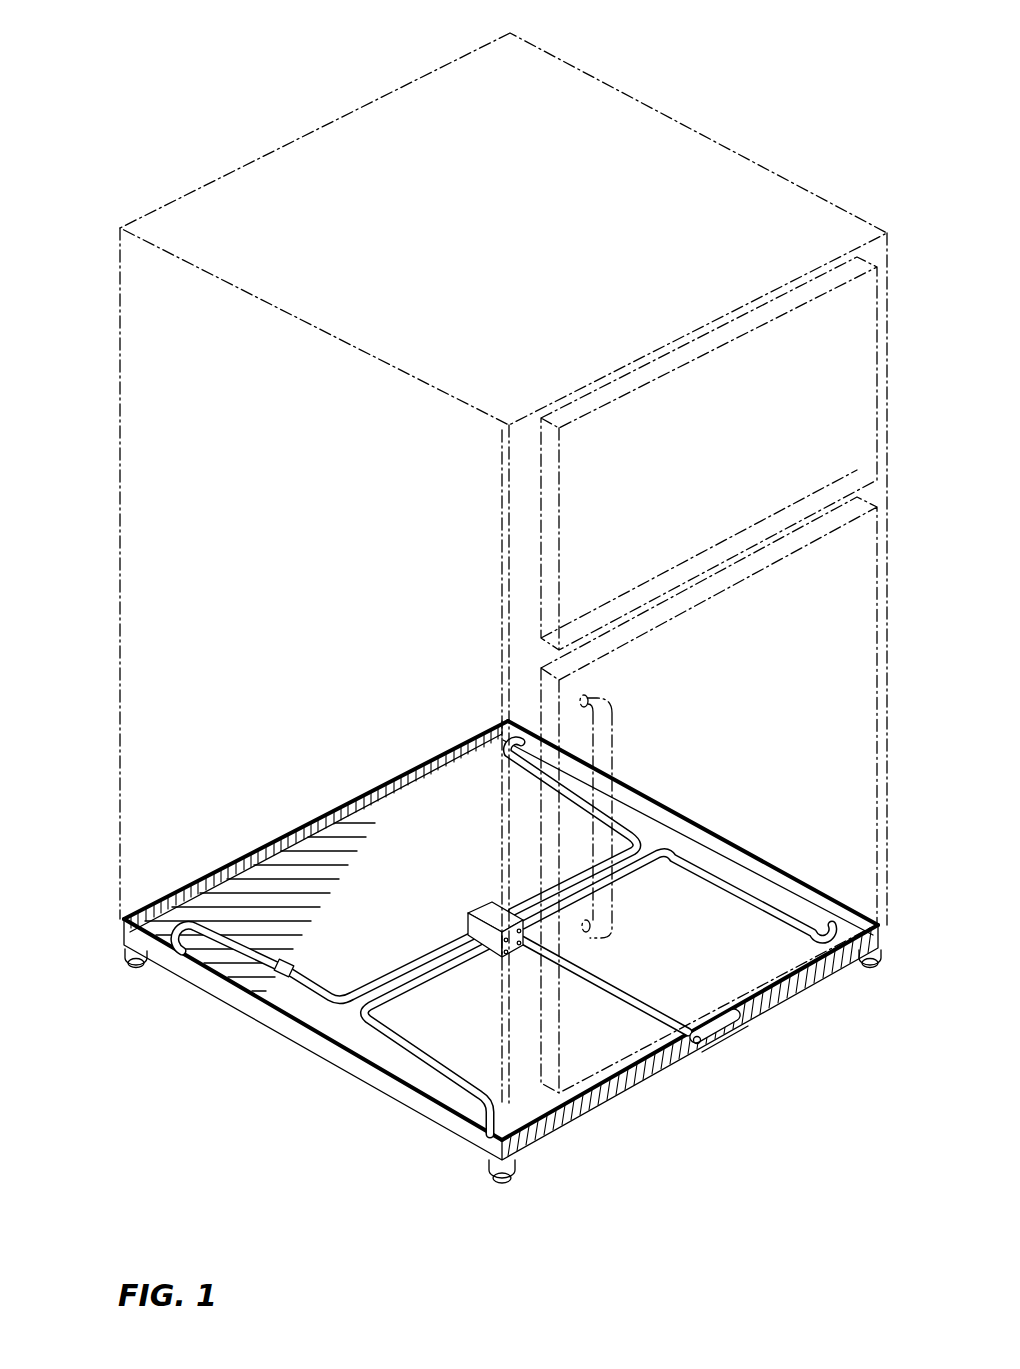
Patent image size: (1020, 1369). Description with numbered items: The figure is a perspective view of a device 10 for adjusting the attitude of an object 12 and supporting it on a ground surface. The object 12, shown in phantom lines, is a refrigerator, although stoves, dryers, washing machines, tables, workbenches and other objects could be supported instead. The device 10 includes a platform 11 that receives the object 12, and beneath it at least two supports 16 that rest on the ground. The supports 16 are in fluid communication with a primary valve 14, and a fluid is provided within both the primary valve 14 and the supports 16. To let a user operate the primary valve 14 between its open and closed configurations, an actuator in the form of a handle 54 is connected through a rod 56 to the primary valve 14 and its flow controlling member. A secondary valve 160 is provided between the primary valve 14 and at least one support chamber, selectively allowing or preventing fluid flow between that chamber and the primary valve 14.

The device 10 is at (375, 1032).
The platform 11 is at (163, 958).
The object 12 is at (198, 180).
The primary valve 14 is at (463, 920).
The support 16 is at (513, 1168).
The handle 54 is at (703, 1048).
The rod 56 is at (652, 1018).
The secondary valve 160 is at (283, 970).